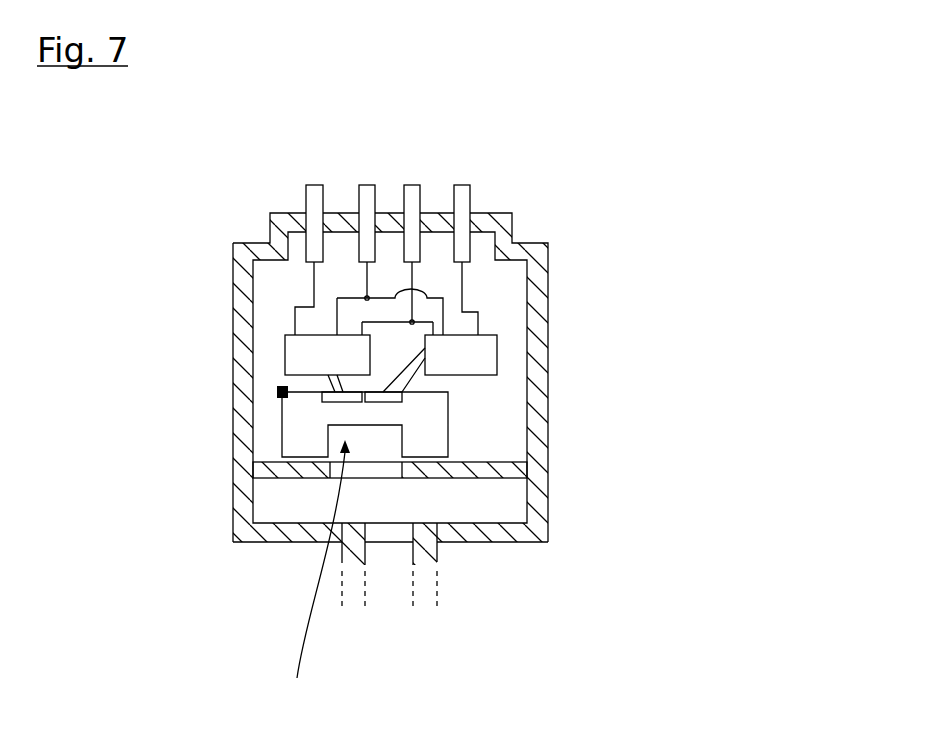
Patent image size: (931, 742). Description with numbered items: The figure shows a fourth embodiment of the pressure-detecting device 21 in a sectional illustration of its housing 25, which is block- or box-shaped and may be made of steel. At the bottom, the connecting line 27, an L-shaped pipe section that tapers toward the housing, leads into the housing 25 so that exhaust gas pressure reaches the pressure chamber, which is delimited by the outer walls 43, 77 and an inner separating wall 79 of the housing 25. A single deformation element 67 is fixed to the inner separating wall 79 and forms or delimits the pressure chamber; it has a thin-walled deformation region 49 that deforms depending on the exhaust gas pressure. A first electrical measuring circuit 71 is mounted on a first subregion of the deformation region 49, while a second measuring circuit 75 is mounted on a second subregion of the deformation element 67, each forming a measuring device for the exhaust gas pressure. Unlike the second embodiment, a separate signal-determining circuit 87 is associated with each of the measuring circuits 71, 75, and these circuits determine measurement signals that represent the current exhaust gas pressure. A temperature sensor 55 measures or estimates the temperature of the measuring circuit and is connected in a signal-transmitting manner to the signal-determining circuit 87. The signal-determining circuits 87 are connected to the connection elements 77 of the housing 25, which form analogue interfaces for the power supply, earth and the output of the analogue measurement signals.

The pressure-detecting device 21 is at (708, 170).
The housing 25 is at (538, 435).
The connecting line 27 is at (437, 588).
The outer wall 43 is at (503, 540).
The deformation region 49 is at (312, 577).
The temperature sensor 55 is at (280, 393).
The deformation element 67 is at (435, 408).
The first electrical measuring circuit 71 is at (348, 398).
The second measuring circuit 75 is at (383, 398).
The connection elements 77 is at (307, 202).
The inner separating wall 79 is at (269, 478).
The signal-determining circuit 87 is at (477, 353).